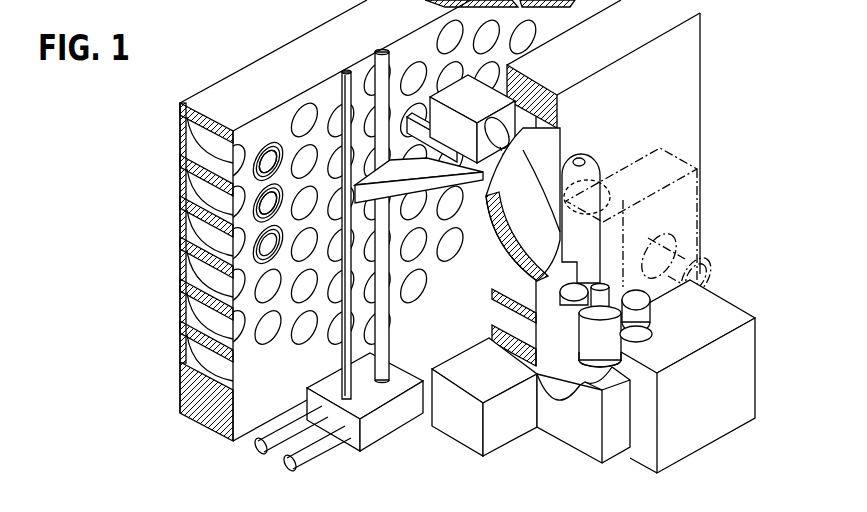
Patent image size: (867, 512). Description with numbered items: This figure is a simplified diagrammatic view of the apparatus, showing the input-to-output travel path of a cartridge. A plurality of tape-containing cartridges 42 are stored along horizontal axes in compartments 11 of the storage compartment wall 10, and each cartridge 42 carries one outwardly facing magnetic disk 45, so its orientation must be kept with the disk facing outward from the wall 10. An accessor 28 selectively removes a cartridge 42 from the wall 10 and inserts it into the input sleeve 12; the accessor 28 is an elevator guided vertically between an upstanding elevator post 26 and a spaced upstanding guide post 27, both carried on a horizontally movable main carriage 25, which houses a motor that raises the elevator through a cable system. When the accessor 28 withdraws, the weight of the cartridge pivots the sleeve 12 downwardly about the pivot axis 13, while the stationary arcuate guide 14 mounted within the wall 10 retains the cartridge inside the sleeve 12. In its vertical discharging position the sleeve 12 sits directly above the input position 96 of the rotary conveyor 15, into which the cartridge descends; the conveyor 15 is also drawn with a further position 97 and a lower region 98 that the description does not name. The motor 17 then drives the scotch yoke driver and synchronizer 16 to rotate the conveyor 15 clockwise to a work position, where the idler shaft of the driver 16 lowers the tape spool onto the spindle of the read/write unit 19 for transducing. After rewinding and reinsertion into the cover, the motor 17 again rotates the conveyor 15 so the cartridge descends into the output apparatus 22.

The storage compartment wall 10 is at (292, 47).
The compartment 11 is at (273, 338).
The input sleeve 12 is at (602, 218).
The pivot axis 13 is at (623, 167).
The arcuate guide 14 is at (536, 225).
The rotary conveyor 15 is at (646, 320).
The scotch yoke driver and synchronizer 16 is at (681, 185).
The motor 17 is at (705, 263).
The read/write unit 19 is at (757, 320).
The output apparatus 22 is at (533, 440).
The main carriage 25 is at (363, 440).
The elevator post 26 is at (388, 325).
The guide post 27 is at (345, 355).
The accessor 28 is at (480, 112).
The cartridge 42 is at (272, 195).
The magnetic disk 45 is at (262, 165).
The input position 96 is at (566, 293).
The lobe 97 is at (638, 343).
The sleeve base 98 is at (579, 359).